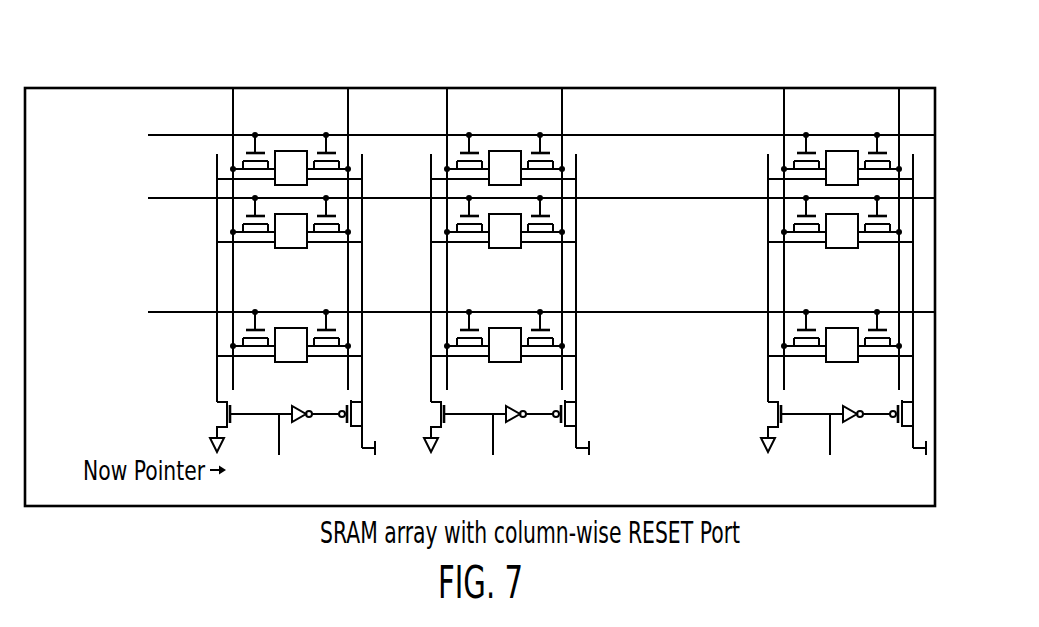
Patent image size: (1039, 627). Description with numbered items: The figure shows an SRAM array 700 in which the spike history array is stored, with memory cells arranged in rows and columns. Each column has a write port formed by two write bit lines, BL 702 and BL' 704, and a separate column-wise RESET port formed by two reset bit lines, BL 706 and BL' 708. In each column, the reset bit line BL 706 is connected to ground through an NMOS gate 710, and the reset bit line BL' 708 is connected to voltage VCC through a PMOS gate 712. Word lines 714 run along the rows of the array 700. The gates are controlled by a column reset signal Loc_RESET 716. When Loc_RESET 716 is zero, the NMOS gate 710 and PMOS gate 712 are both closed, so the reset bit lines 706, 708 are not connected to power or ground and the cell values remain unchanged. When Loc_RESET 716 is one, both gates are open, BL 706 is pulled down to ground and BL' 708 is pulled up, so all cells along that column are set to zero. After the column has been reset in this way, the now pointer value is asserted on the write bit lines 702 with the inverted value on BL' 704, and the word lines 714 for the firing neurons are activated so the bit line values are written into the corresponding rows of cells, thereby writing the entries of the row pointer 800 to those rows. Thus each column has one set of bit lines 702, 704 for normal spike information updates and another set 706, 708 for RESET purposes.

The SRAM array 700 is at (629, 66).
The write bit line BL 702 is at (784, 88).
The write bit line BL' 704 is at (899, 88).
The reset bit line BL 706 is at (768, 172).
The reset bit line BL' 708 is at (362, 188).
The ground (GND) connection with NMOS gate 710 is at (779, 399).
The voltage (VCC) connection with PMOS gate 712 is at (899, 399).
The word line 714 is at (115, 329).
The Loc_RESET signal 716 is at (283, 442).
The row pointer 800 is at (123, 608).